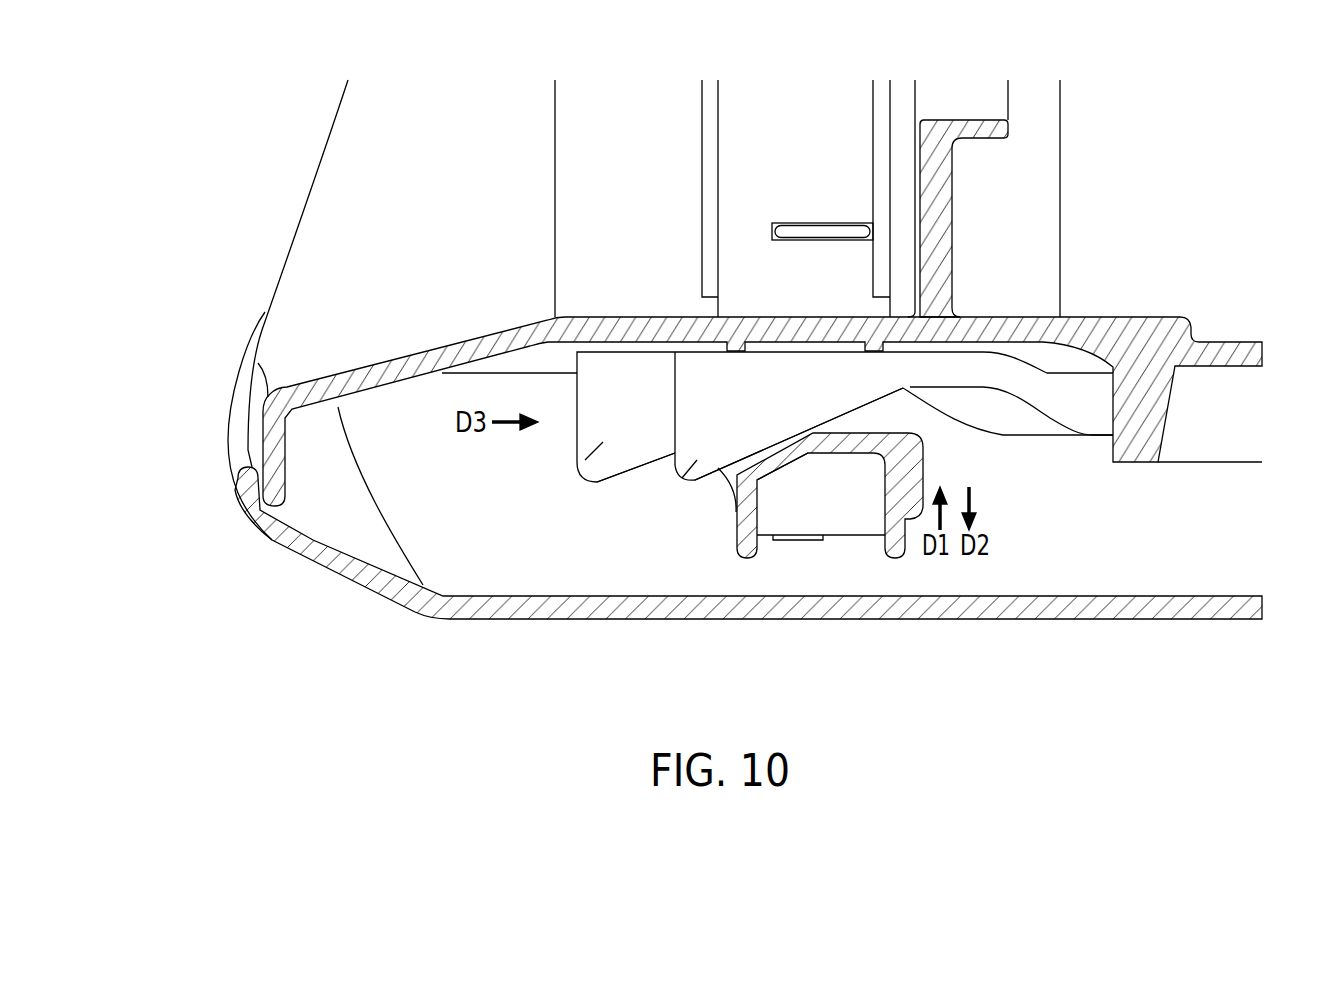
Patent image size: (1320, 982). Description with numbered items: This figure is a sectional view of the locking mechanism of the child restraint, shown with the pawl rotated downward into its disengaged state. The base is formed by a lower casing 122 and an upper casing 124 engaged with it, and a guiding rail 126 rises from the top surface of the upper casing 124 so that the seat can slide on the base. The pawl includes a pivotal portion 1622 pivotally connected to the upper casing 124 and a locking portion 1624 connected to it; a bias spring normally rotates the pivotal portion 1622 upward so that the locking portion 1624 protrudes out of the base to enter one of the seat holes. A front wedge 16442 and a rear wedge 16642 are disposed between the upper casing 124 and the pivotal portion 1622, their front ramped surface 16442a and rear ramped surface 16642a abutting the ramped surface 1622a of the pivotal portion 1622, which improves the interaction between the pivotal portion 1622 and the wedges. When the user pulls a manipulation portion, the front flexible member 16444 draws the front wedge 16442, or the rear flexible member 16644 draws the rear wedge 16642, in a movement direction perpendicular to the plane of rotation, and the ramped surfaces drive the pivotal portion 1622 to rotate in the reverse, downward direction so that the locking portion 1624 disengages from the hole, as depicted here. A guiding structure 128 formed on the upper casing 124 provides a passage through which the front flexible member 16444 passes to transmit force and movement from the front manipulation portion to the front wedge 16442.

The lower casing 122 is at (335, 568).
The upper casing 124 is at (308, 300).
The guiding rail 126 is at (940, 223).
The guiding structure 128 is at (1205, 435).
The pivotal portion 1622 is at (898, 500).
The ramped surface 1622a is at (767, 446).
The locking portion 1624 is at (817, 230).
The front wedge 16442 is at (693, 462).
The front ramped surface 16442a is at (706, 479).
The front flexible member 16444 is at (1093, 410).
The rear wedge 16642 is at (605, 442).
The rear ramped surface 16642a is at (627, 472).
The rear flexible member 16644 is at (1018, 425).